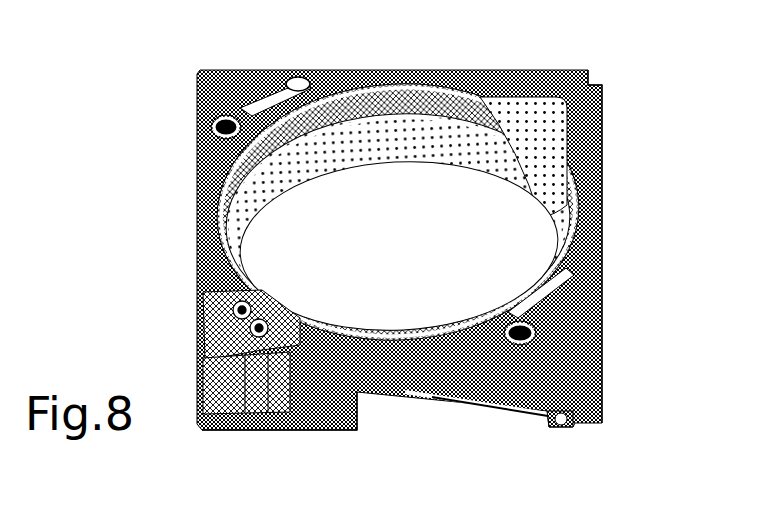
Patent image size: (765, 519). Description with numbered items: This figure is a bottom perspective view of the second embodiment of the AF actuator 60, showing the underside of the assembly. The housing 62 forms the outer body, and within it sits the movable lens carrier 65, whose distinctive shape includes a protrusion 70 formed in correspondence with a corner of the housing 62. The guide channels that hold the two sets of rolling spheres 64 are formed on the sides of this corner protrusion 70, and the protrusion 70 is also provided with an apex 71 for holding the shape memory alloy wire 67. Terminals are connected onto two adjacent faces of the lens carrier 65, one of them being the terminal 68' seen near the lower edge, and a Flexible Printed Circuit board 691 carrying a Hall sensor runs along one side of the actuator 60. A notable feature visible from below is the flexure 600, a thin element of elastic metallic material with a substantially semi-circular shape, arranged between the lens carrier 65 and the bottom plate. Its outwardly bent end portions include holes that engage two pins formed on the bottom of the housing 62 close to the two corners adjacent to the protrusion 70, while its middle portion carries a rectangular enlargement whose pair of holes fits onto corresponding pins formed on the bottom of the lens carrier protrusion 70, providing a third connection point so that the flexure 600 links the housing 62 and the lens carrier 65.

The AF actuator 60 is at (404, 258).
The flexure 600 is at (193, 215).
The housing 62 is at (240, 70).
The rolling spheres 64 is at (322, 431).
The movable lens carrier 65 is at (604, 117).
The shape memory alloy wire 67 is at (498, 416).
The terminal 68' is at (570, 453).
The Flexible Printed Circuit board 691 is at (604, 192).
The protrusion 70 is at (248, 431).
The apex 71 is at (205, 348).